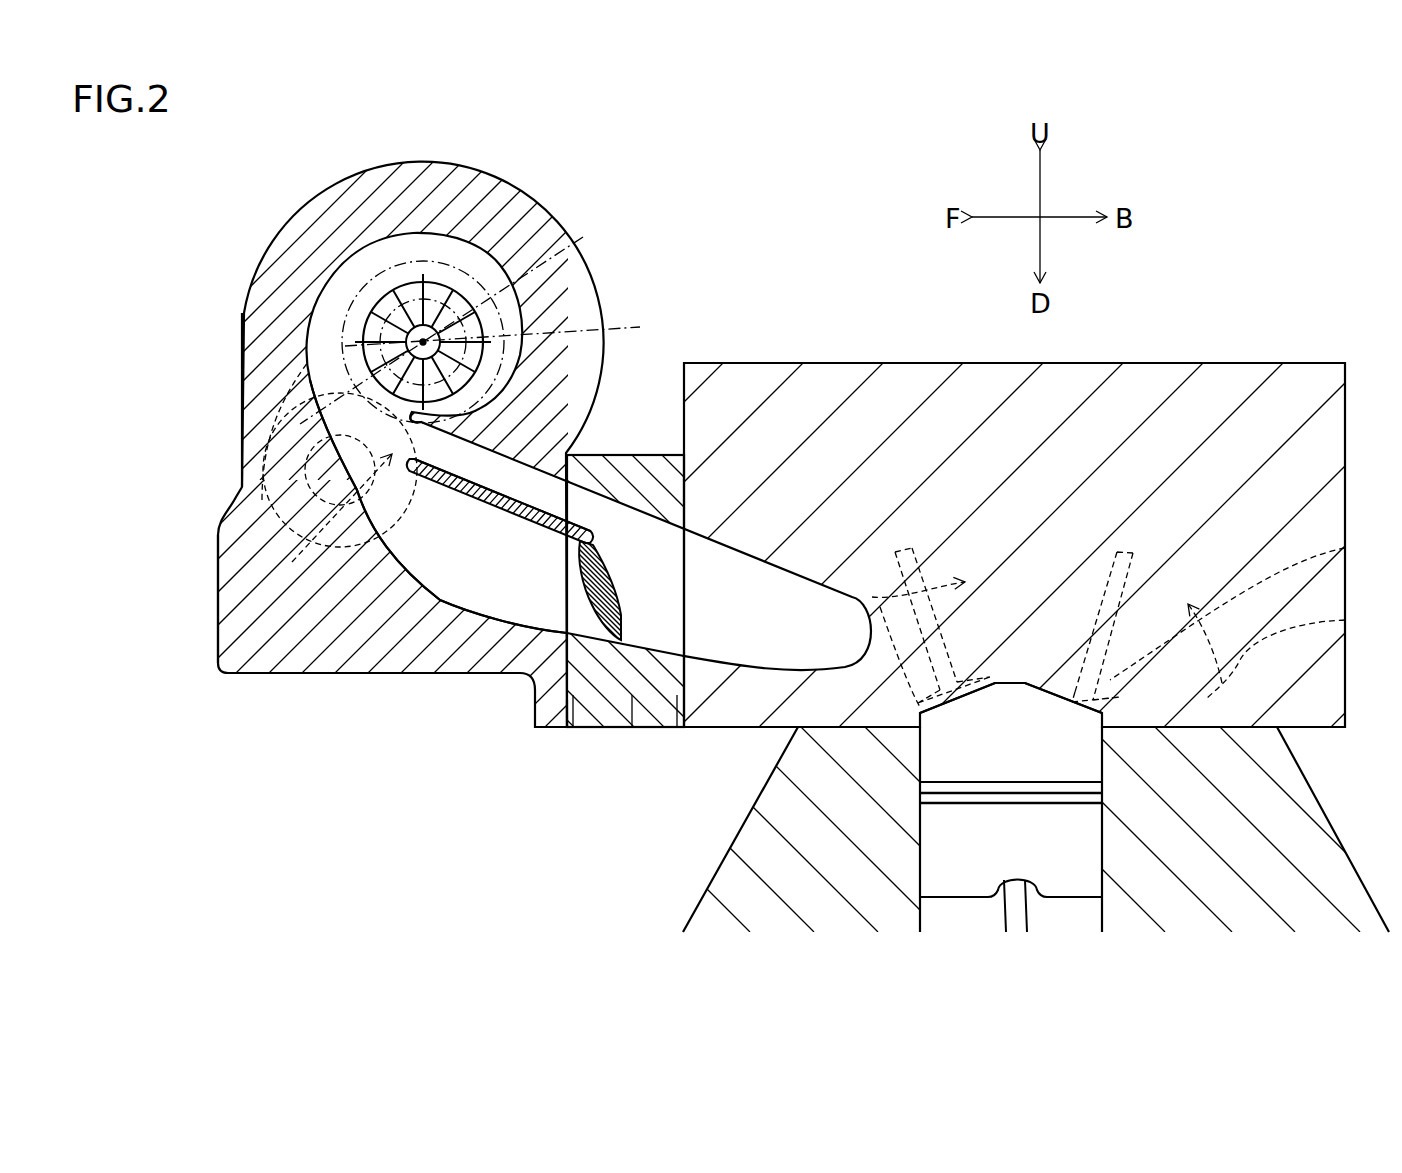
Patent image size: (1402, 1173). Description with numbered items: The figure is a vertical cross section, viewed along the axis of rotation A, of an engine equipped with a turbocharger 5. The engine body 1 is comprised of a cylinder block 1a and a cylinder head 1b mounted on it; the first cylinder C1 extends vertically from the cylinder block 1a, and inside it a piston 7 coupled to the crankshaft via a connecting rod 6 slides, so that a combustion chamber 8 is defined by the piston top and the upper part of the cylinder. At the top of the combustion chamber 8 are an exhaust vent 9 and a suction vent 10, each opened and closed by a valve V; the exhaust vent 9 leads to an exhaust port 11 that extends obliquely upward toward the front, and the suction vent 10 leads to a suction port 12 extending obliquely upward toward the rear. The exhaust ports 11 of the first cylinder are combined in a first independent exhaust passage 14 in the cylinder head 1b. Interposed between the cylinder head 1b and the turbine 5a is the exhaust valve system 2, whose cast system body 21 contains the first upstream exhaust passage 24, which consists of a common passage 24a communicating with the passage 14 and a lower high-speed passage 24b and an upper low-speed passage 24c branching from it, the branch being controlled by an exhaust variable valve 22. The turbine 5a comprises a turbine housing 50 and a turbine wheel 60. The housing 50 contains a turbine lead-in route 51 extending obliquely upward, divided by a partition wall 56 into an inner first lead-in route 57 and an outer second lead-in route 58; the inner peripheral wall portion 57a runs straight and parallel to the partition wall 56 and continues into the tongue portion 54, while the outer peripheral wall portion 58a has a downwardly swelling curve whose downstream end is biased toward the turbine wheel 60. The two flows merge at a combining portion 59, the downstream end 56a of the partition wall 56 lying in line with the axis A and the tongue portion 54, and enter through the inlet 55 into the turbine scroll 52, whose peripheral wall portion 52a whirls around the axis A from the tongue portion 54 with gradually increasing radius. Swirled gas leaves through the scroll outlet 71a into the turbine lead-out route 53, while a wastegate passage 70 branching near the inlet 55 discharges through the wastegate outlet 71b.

The engine body 1 is at (862, 584).
The cylinder block 1a is at (1300, 768).
The cylinder head 1b is at (1178, 362).
The exhaust valve system 2 is at (660, 452).
The turbocharger 5 is at (454, 438).
The turbine 5a is at (288, 182).
The connecting rod 6 is at (1010, 921).
The piston 7 is at (933, 853).
The combustion chamber 8 is at (1017, 761).
The exhaust vent 9 is at (964, 660).
The suction vent 10 is at (1058, 660).
The exhaust port 11 is at (897, 650).
The suction port 12 is at (1218, 668).
The first independent exhaust passage 14 is at (799, 636).
The system body 21 is at (626, 470).
The exhaust variable valve 22 is at (581, 573).
The first upstream exhaust passage 24 is at (707, 784).
The common passage 24a is at (653, 615).
The high-speed passage 24b is at (590, 625).
The low-speed passage 24c is at (582, 500).
The turbine housing 50 is at (262, 676).
The turbine lead-in route 51 is at (529, 741).
The turbine scroll 52 is at (336, 308).
The peripheral wall portion 52a is at (310, 331).
The turbine lead-out route 53 is at (284, 380).
The tongue portion 54 is at (416, 418).
The inlet 55 is at (372, 424).
The partition wall 56 is at (475, 545).
The downstream end of the partition wall 56a is at (317, 520).
The first lead-in route 57 is at (560, 528).
The inner peripheral wall portion 57a is at (506, 478).
The second lead-in route 58 is at (457, 600).
The outer peripheral wall portion 58a is at (413, 470).
The combining portion 59 is at (252, 485).
The turbine wheel 60 is at (432, 284).
The wastegate passage 70 is at (384, 548).
The scroll outlet 71a is at (468, 315).
The wastegate outlet 71b is at (305, 468).
The axis of rotation A is at (502, 329).
The valve V is at (1150, 552).
The first cylinder C1 is at (1110, 845).